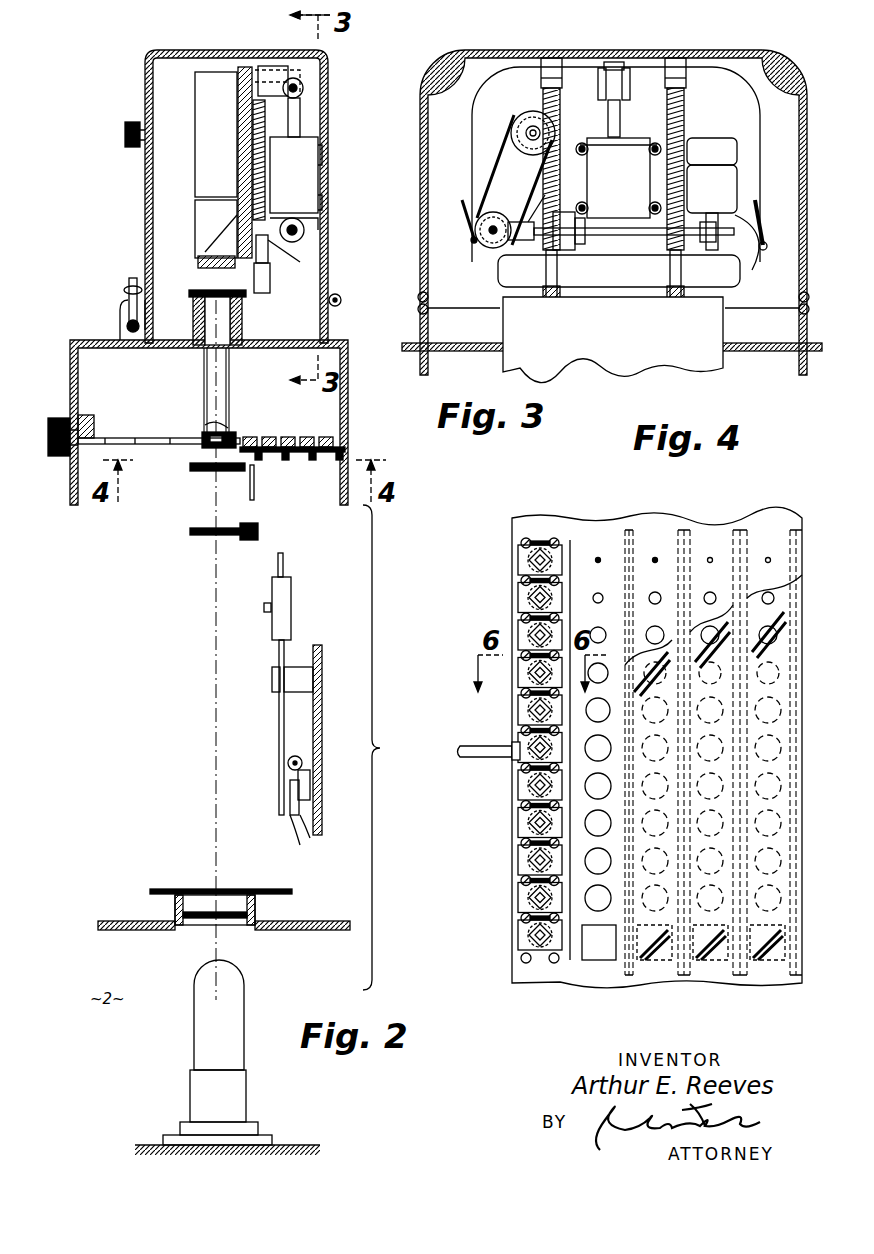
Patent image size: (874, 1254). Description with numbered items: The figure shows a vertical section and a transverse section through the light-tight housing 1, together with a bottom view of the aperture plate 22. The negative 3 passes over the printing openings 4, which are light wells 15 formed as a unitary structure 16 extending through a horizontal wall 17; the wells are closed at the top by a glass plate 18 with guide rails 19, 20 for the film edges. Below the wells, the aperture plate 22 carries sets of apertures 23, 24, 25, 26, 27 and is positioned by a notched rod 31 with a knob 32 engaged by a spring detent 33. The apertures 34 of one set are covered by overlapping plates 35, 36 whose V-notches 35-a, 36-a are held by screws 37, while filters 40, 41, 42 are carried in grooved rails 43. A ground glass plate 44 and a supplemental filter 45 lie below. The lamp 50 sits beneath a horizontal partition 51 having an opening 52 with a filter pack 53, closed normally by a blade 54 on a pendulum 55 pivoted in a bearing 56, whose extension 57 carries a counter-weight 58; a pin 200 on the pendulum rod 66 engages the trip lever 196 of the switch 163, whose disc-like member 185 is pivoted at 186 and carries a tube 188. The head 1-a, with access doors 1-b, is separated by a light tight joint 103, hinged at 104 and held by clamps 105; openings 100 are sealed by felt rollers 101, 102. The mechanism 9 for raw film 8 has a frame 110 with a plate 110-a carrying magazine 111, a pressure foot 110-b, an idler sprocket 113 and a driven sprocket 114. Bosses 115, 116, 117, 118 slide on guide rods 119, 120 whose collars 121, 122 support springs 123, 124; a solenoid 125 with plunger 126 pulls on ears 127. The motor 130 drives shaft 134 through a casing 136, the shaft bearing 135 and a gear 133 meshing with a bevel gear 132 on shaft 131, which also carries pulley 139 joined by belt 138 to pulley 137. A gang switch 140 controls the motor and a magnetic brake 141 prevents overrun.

In FIG. 2, the light-tight housing 1 is at (348, 402).
In FIG. 2, the head 1-a is at (328, 136).
In FIG. 2, the access door 1-b is at (145, 160).
In FIG. 3, the negative 3 is at (752, 285).
In FIG. 2, the printing openings 4 is at (242, 328).
In FIG. 2, the raw film 8 is at (238, 290).
In FIG. 3, the raw film 8 is at (742, 272).
In FIG. 2, the film handling mechanism 9 is at (212, 171).
In FIG. 3, the film handling mechanism 9 is at (748, 108).
In FIG. 2, the light wells 15 is at (230, 374).
In FIG. 2, the unitary structure 16 is at (198, 360).
In FIG. 3, the unitary structure 16 is at (613, 340).
In FIG. 2, the horizontal wall 17 is at (282, 345).
In FIG. 3, the horizontal wall 17 is at (756, 351).
In FIG. 2, the glass plate 18 is at (193, 320).
In FIG. 2, the guide rail 19 is at (268, 296).
In FIG. 2, the guide rail 20 is at (190, 296).
In FIG. 2, the aperture plate 22 is at (205, 435).
In FIG. 4, the aperture plate 22 is at (526, 535).
In FIG. 2, the set of apertures 23 is at (250, 437).
In FIG. 4, the set of apertures 23 is at (541, 530).
In FIG. 2, the set of apertures 24 is at (268, 437).
In FIG. 4, the set of apertures 24 is at (600, 530).
In FIG. 2, the set of apertures 25 is at (287, 437).
In FIG. 4, the set of apertures 25 is at (655, 530).
In FIG. 2, the set of apertures 26 is at (307, 437).
In FIG. 4, the set of apertures 26 is at (710, 530).
In FIG. 2, the set of apertures 27 is at (326, 437).
In FIG. 4, the set of apertures 27 is at (766, 530).
In FIG. 2, the notched rod 31 is at (140, 444).
In FIG. 4, the notched rod 31 is at (484, 757).
In FIG. 2, the knob 32 is at (56, 418).
In FIG. 2, the spring detent 33 is at (90, 444).
In FIG. 2, the apertures 34 is at (213, 430).
In FIG. 4, the apertures 34 is at (518, 572).
In FIG. 4, the overlapping plate 35 is at (518, 556).
In FIG. 4, the V-notch 35-a is at (522, 542).
In FIG. 4, the overlapping plate 36 is at (572, 580).
In FIG. 4, the V-notch 36-a is at (568, 554).
In FIG. 4, the screws 37 is at (518, 540).
In FIG. 2, the filter 40 is at (256, 470).
In FIG. 4, the filter 40 is at (652, 970).
In FIG. 2, the filter 41 is at (284, 460).
In FIG. 4, the filter 41 is at (714, 970).
In FIG. 2, the filter 42 is at (336, 460).
In FIG. 4, the filter 42 is at (772, 970).
In FIG. 2, the grooved rails 43 is at (343, 452).
In FIG. 4, the grooved rails 43 is at (680, 580).
In FIG. 2, the ground glass plate 44 is at (205, 472).
In FIG. 2, the supplemental filter 45 is at (200, 536).
In FIG. 2, the electric lamp 50 is at (245, 990).
In FIG. 2, the horizontal partition 51 is at (305, 930).
In FIG. 2, the light transmitting opening 52 is at (185, 928).
In FIG. 2, the filter pack 53 is at (200, 928).
In FIG. 2, the shutter blade 54 is at (165, 888).
In FIG. 2, the pendulum 55 is at (276, 713).
In FIG. 2, the antifriction bearing structure 56 is at (272, 687).
In FIG. 2, the extension 57 is at (284, 559).
In FIG. 2, the counter-weight 58 is at (291, 593).
In FIG. 2, the pendulum rod 66 is at (280, 750).
In FIG. 3, the openings 100 is at (420, 330).
In FIG. 3, the felt rollers 101 is at (420, 298).
In FIG. 3, the felt rollers 102 is at (430, 312).
In FIG. 2, the light tight joint 103 is at (328, 310).
In FIG. 2, the hinge 104 is at (341, 300).
In FIG. 2, the clamps 105 is at (128, 296).
In FIG. 2, the frame 110 is at (238, 118).
In FIG. 3, the frame 110 is at (754, 134).
In FIG. 2, the vertically extending plate 110-a is at (245, 96).
In FIG. 3, the vertically extending plate 110-a is at (752, 165).
In FIG. 2, the pressure foot 110-b is at (200, 250).
In FIG. 2, the film magazine 111 is at (195, 147).
In FIG. 3, the idler sprocket 113 is at (758, 238).
In FIG. 3, the driven sprocket 114 is at (496, 262).
In FIG. 3, the boss 115 is at (560, 86).
In FIG. 3, the boss 116 is at (560, 255).
In FIG. 2, the boss 117 is at (318, 72).
In FIG. 3, the boss 117 is at (682, 84).
In FIG. 2, the boss 118 is at (268, 262).
In FIG. 3, the boss 118 is at (684, 276).
In FIG. 3, the guide rod 119 is at (560, 280).
In FIG. 3, the guide rod 120 is at (668, 280).
In FIG. 3, the collar 121 is at (519, 265).
In FIG. 2, the collar 122 is at (272, 255).
In FIG. 3, the collar 122 is at (686, 256).
In FIG. 3, the compression spring 123 is at (560, 108).
In FIG. 2, the compression spring 124 is at (253, 135).
In FIG. 3, the compression spring 124 is at (684, 108).
In FIG. 2, the solenoid 125 is at (296, 175).
In FIG. 3, the solenoid 125 is at (618, 178).
In FIG. 2, the plunger 126 is at (300, 115).
In FIG. 3, the plunger 126 is at (620, 116).
In FIG. 2, the projecting ears 127 is at (303, 88).
In FIG. 3, the projecting ears 127 is at (608, 70).
In FIG. 3, the electric motor 130 is at (712, 207).
In FIG. 3, the shaft 131 is at (482, 250).
In FIG. 3, the bevel gear 132 is at (470, 236).
In FIG. 3, the gear 133 is at (520, 220).
In FIG. 2, the shaft 134 is at (296, 236).
In FIG. 3, the shaft 134 is at (646, 238).
In FIG. 3, the bearing 135 is at (500, 280).
In FIG. 2, the casing 136 is at (304, 226).
In FIG. 3, the casing 136 is at (764, 222).
In FIG. 3, the pulley 137 is at (518, 118).
In FIG. 3, the friction belt 138 is at (490, 162).
In FIG. 3, the pulley 139 is at (468, 192).
In FIG. 3, the gang switch 140 is at (576, 210).
In FIG. 3, the magnetic brake 141 is at (712, 151).
In FIG. 2, the switch 163 is at (302, 742).
In FIG. 2, the disc-like member 185 is at (310, 768).
In FIG. 2, the pivot 186 is at (292, 786).
In FIG. 2, the closed tube 188 is at (302, 758).
In FIG. 2, the trip lever 196 is at (308, 828).
In FIG. 2, the pin 200 is at (290, 812).